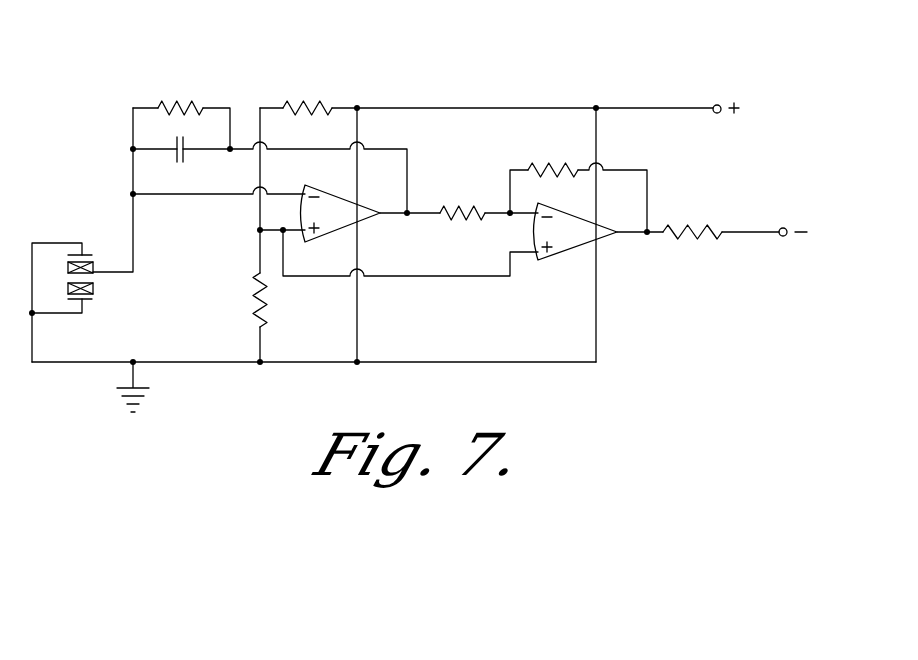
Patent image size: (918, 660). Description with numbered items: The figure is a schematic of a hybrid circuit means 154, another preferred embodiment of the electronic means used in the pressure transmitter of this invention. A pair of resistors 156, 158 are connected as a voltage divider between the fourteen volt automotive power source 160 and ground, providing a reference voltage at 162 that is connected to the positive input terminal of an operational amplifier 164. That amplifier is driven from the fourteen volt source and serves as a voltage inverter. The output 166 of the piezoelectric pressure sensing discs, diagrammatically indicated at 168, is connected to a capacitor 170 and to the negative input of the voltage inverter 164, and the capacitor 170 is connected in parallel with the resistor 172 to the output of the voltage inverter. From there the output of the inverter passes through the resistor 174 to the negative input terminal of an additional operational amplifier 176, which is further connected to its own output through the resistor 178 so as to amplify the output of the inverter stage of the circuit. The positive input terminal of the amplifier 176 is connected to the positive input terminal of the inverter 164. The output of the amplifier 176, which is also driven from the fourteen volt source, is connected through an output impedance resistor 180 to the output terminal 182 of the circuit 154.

The hybrid circuit means 154 is at (533, 97).
The resistor 156 is at (295, 79).
The resistor 158 is at (257, 292).
The automotive power source 160 is at (718, 105).
The reference voltage 162 is at (259, 230).
The operational amplifier 164 is at (367, 218).
The output of the piezoelectric pressure sensing discs 166 is at (96, 288).
The piezoelectric pressure sensing discs 168 is at (93, 266).
The capacitor 170 is at (186, 152).
The resistor 172 is at (212, 80).
The resistor 174 is at (462, 217).
The additional operational amplifier 176 is at (607, 238).
The resistor 178 is at (549, 131).
The output impedance resistor 180 is at (701, 246).
The output terminal 182 is at (777, 202).